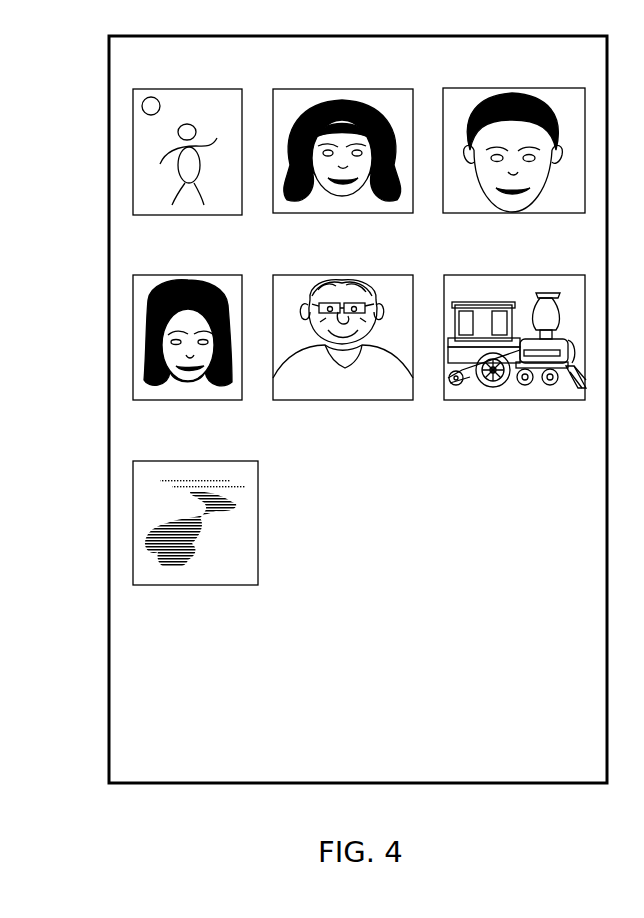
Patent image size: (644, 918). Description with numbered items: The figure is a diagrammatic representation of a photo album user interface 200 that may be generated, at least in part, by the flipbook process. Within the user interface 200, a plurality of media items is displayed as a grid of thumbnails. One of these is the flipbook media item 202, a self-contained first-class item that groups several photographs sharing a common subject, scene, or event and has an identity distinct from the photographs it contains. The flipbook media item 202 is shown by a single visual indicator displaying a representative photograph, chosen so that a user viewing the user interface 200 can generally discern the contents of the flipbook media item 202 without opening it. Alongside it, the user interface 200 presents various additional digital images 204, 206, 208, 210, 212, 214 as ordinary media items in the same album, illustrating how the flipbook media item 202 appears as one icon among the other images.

The photo album user interface 200 is at (102, 42).
The flipbook media item 202 is at (195, 89).
The digital image 204 is at (333, 89).
The digital image 206 is at (522, 88).
The digital image 208 is at (188, 275).
The digital image 210 is at (335, 275).
The digital image 212 is at (506, 275).
The digital image 214 is at (197, 461).